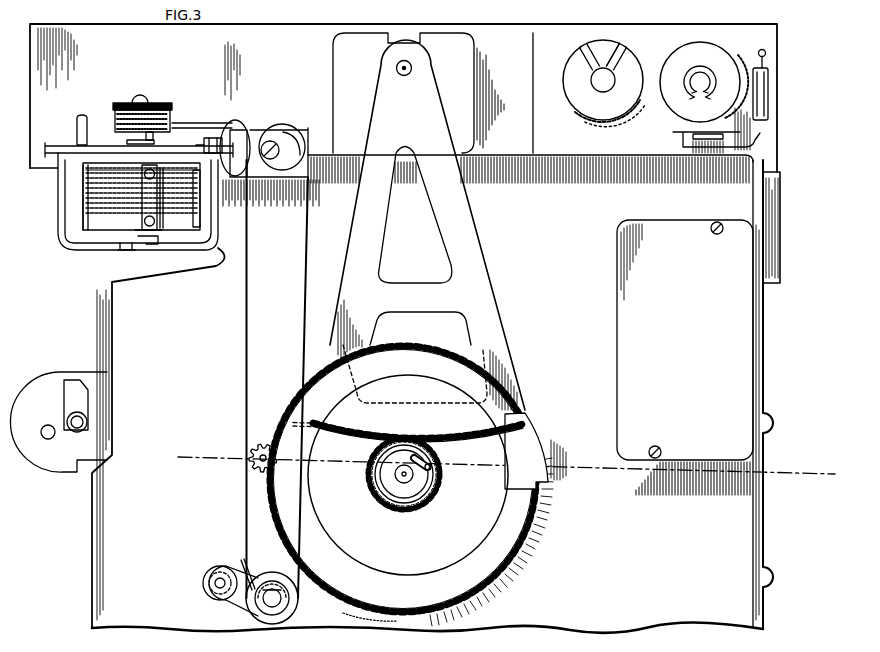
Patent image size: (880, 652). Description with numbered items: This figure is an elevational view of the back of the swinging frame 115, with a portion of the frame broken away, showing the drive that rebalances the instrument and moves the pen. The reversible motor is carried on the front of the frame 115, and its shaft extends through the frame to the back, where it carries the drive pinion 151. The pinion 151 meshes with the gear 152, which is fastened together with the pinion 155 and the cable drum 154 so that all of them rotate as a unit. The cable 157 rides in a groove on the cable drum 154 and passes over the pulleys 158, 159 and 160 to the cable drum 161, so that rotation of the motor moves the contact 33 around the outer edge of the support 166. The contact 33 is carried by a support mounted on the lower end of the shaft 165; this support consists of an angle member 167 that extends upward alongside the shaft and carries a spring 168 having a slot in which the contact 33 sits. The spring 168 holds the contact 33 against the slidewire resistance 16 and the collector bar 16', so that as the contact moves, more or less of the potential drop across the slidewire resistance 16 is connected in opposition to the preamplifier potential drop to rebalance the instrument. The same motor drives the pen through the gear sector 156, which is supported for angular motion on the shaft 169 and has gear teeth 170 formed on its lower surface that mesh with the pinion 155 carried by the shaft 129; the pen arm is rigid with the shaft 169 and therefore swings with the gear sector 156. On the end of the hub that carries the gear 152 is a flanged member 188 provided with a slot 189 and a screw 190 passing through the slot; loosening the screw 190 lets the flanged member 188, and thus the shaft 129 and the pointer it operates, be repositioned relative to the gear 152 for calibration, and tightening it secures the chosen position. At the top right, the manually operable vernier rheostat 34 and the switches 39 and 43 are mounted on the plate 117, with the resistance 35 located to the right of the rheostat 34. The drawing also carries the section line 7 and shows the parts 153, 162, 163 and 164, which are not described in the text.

The plate 117 is at (508, 40).
The frame 115 is at (100, 547).
The support 166 is at (108, 222).
The slidewire resistance 16 is at (113, 196).
The collector bar 16' is at (112, 194).
The angle member 167 is at (135, 237).
The spring 168 is at (185, 222).
The contact 33 is at (197, 200).
The cable drum 161 is at (114, 107).
The shaft 165 is at (146, 137).
The pulley 160 is at (235, 125).
The pulley 159 is at (288, 126).
The gear sector 156 is at (474, 251).
The shaft 169 is at (414, 67).
The switch 43 is at (596, 66).
The switch 39 is at (626, 62).
The vernier rheostat 34 is at (720, 58).
The resistance 35 is at (768, 97).
The section line 7- 7 is at (204, 450).
The cable 157 is at (247, 336).
The pulley 158 is at (299, 603).
The roller 163 is at (208, 583).
The link 162 is at (232, 603).
The spring rod 164 is at (243, 575).
The drive pinion 151 is at (258, 443).
The gear 152 is at (510, 528).
The cable drum 154 is at (405, 562).
The gear teeth 170 is at (357, 443).
The sector end block 153 is at (535, 440).
The pinion 155 is at (382, 505).
The flanged member 188 is at (418, 489).
The shaft 129 is at (402, 476).
The slot 189 is at (437, 466).
The screw 190 is at (430, 460).